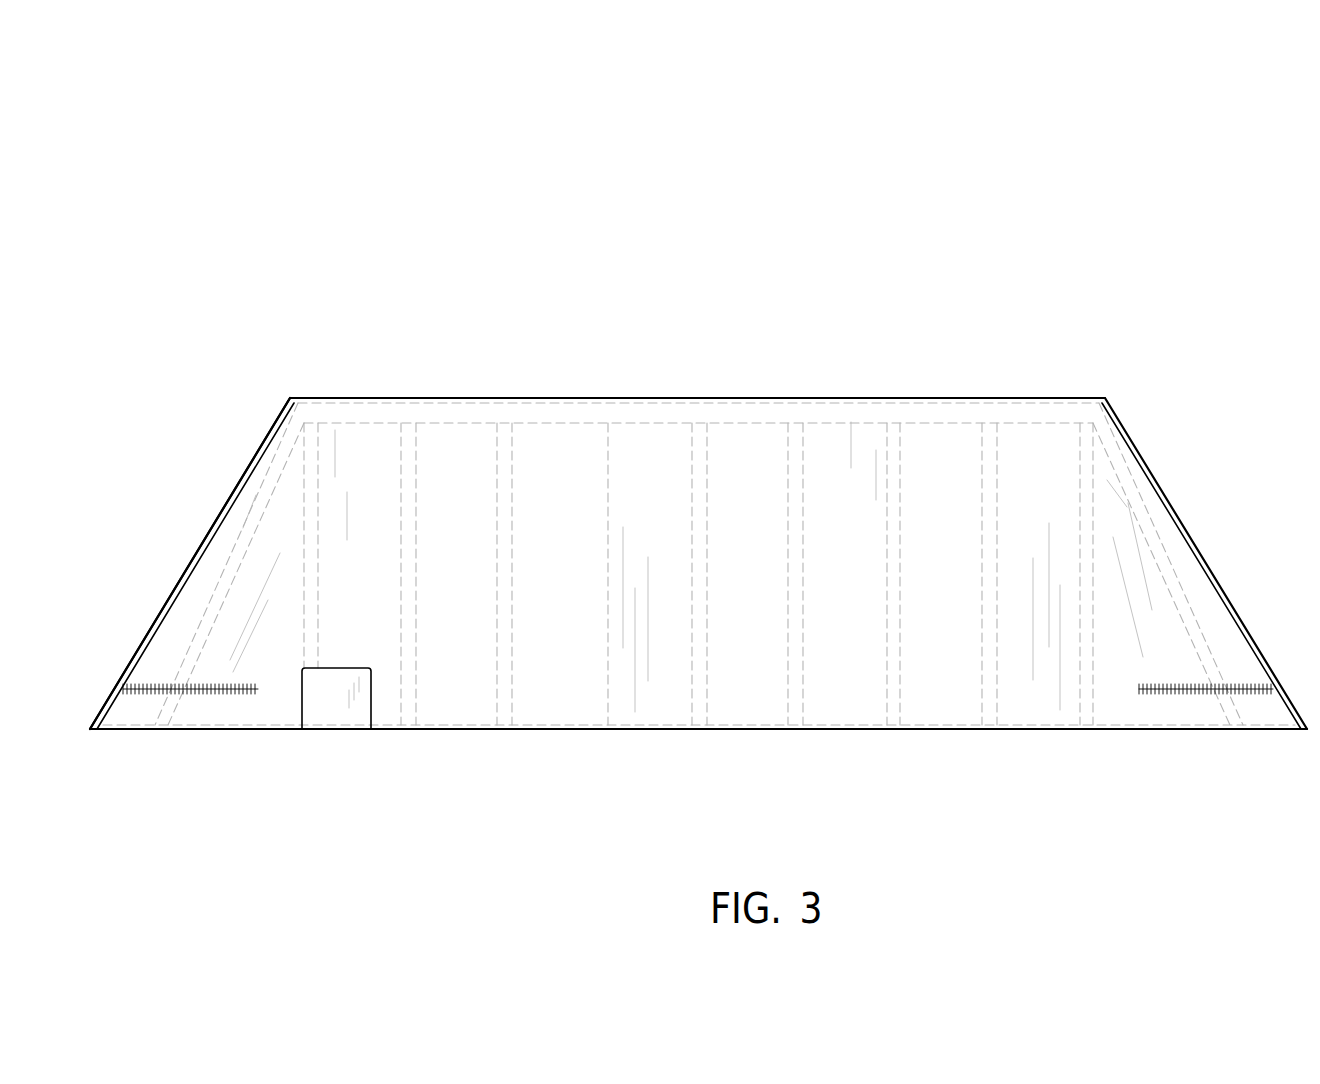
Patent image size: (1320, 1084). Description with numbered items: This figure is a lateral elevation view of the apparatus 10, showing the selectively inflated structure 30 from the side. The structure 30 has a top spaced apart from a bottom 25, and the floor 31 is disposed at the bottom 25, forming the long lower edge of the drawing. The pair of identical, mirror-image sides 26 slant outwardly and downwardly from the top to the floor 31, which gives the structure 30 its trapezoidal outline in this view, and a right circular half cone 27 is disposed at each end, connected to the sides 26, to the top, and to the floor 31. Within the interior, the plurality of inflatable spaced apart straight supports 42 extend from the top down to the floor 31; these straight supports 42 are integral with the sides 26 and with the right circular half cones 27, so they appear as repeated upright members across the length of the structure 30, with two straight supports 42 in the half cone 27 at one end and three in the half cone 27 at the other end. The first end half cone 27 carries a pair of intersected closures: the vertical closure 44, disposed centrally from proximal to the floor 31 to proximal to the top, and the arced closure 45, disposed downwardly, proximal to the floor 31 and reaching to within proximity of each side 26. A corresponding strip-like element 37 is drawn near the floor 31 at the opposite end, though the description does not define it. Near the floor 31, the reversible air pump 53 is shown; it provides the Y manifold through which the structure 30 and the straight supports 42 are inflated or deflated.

The apparatus 10 is at (604, 166).
The bottom 25 is at (535, 741).
The sides 26 is at (1045, 443).
The right circular half cone 27 is at (172, 617).
The selectively inflated structure 30 is at (1066, 395).
The floor 31 is at (1077, 730).
The fastener strip 37 is at (1167, 702).
The straight supports 42 is at (405, 453).
The vertical closure 44 is at (128, 667).
The arced closure 45 is at (210, 688).
The reversible air pump 53 is at (343, 718).